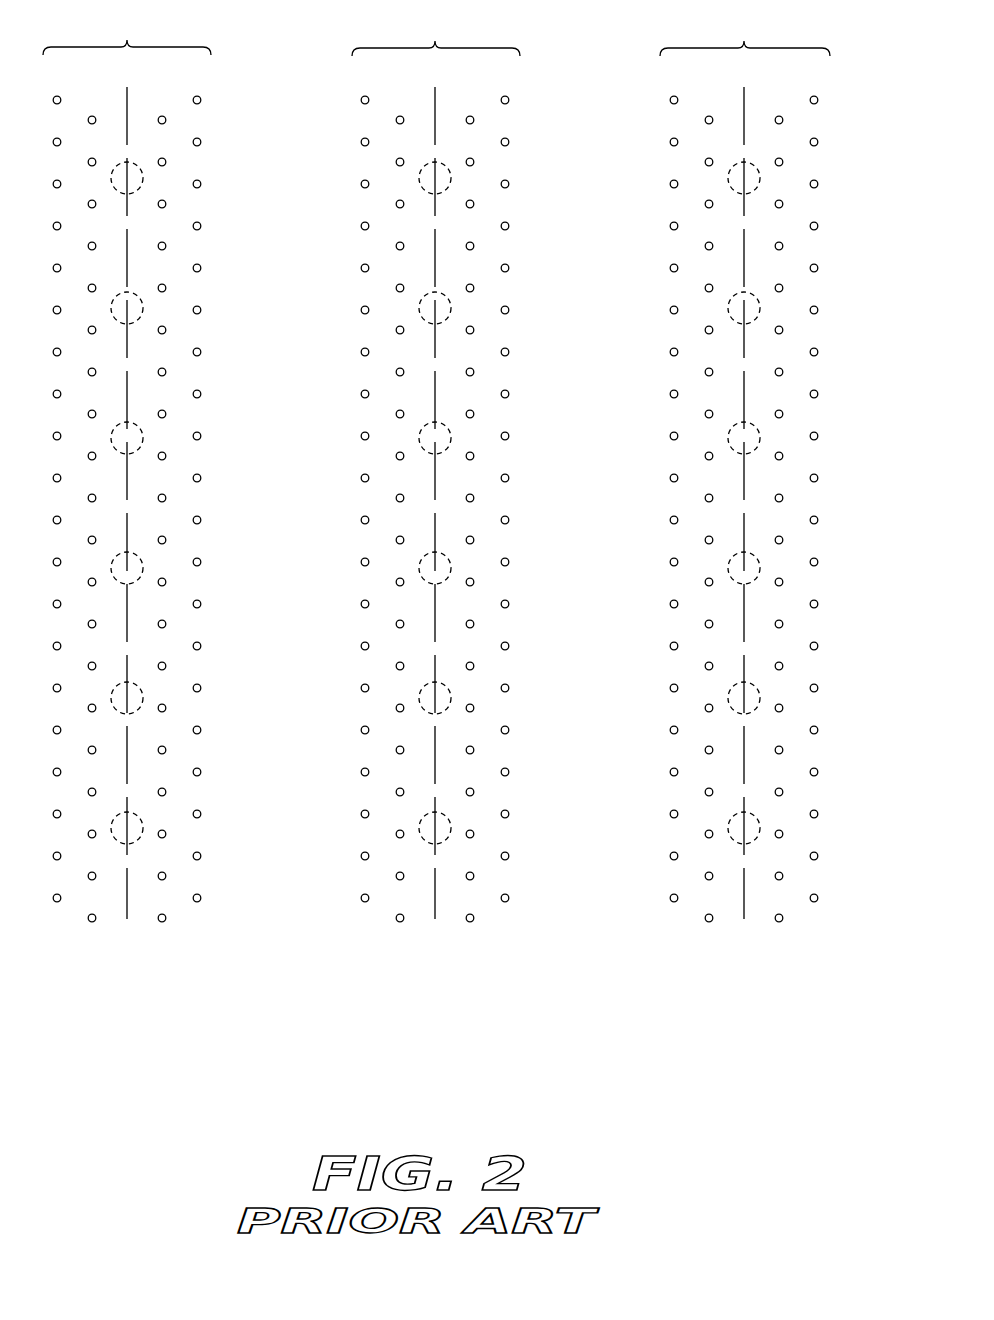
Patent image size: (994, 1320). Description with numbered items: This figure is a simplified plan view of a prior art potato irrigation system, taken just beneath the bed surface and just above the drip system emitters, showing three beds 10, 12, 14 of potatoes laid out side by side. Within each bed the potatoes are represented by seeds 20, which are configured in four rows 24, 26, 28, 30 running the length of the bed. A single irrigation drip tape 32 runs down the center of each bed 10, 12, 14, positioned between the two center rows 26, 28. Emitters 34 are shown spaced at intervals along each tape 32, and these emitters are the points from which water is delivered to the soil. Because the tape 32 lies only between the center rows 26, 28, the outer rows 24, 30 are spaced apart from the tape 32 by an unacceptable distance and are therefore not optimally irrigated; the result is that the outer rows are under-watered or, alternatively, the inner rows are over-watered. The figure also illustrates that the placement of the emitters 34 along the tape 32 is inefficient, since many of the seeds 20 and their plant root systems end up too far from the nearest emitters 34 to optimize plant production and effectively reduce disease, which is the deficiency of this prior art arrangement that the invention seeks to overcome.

The bed 10 is at (127, 28).
The bed 12 is at (436, 29).
The bed 14 is at (745, 29).
The seeds 20 is at (200, 392).
The row 24 is at (363, 925).
The row 26 is at (398, 952).
The row 28 is at (471, 952).
The row 30 is at (507, 925).
The irrigation drip tape 32 is at (127, 897).
The emitters 34 is at (128, 440).